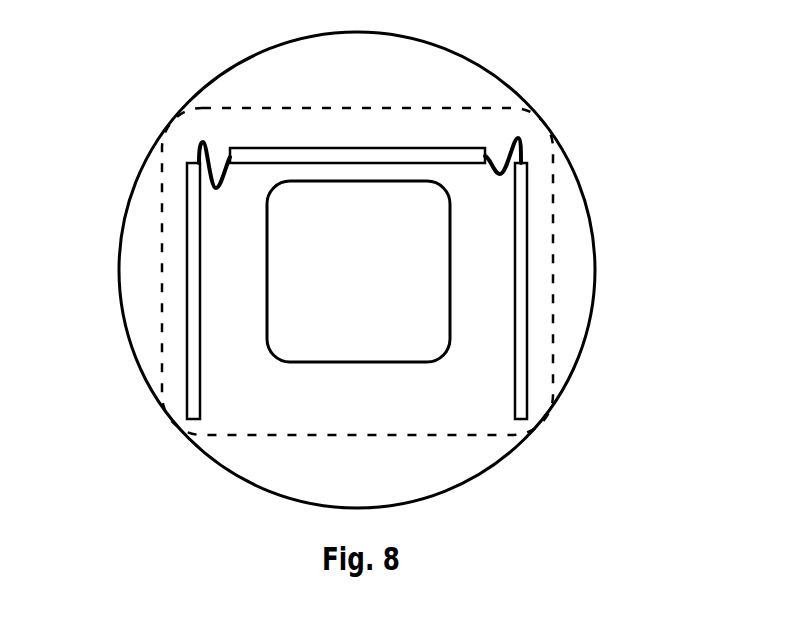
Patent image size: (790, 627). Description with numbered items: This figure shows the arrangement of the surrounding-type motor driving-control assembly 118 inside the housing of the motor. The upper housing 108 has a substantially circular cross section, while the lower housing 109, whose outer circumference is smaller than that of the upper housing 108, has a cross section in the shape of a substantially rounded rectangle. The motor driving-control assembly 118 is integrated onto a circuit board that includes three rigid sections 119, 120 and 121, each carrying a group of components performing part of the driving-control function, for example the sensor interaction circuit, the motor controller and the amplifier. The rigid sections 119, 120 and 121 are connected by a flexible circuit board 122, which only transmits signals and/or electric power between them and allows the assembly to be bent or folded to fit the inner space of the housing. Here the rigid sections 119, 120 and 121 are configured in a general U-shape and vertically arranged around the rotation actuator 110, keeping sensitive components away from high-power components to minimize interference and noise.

The upper housing 108 is at (520, 449).
The lower housing 109 is at (553, 228).
The rotation actuator 110 is at (358, 271).
The motor driving-control assembly 118 is at (85, 78).
The rigid section 119 is at (190, 277).
The rigid section 120 is at (353, 152).
The rigid section 121 is at (522, 285).
The flexible circuit board 122 is at (202, 140).